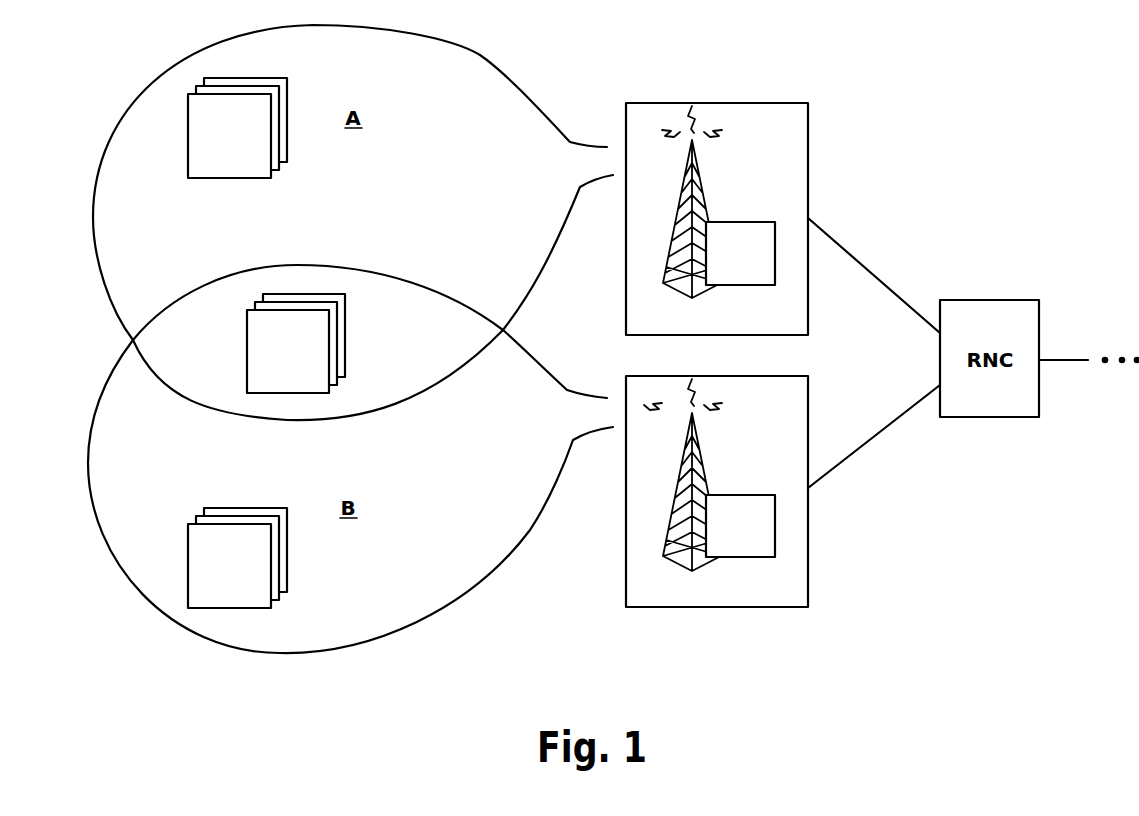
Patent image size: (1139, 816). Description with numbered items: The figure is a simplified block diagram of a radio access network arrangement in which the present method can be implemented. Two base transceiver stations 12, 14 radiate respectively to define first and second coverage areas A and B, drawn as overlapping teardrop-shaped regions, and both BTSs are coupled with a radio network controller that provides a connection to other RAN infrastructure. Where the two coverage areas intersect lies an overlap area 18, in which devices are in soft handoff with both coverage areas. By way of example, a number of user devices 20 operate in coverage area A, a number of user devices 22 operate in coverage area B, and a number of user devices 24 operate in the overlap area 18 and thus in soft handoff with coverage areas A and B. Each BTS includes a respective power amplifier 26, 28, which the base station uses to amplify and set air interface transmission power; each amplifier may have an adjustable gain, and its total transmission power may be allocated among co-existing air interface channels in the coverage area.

The base transceiver station 12 is at (741, 218).
The base transceiver station 14 is at (740, 494).
The overlap area 18 is at (425, 343).
The user devices 20 is at (188, 153).
The user devices 22 is at (288, 560).
The user devices 24 is at (247, 335).
The power amplifier 26 is at (748, 222).
The power amplifier 28 is at (748, 495).